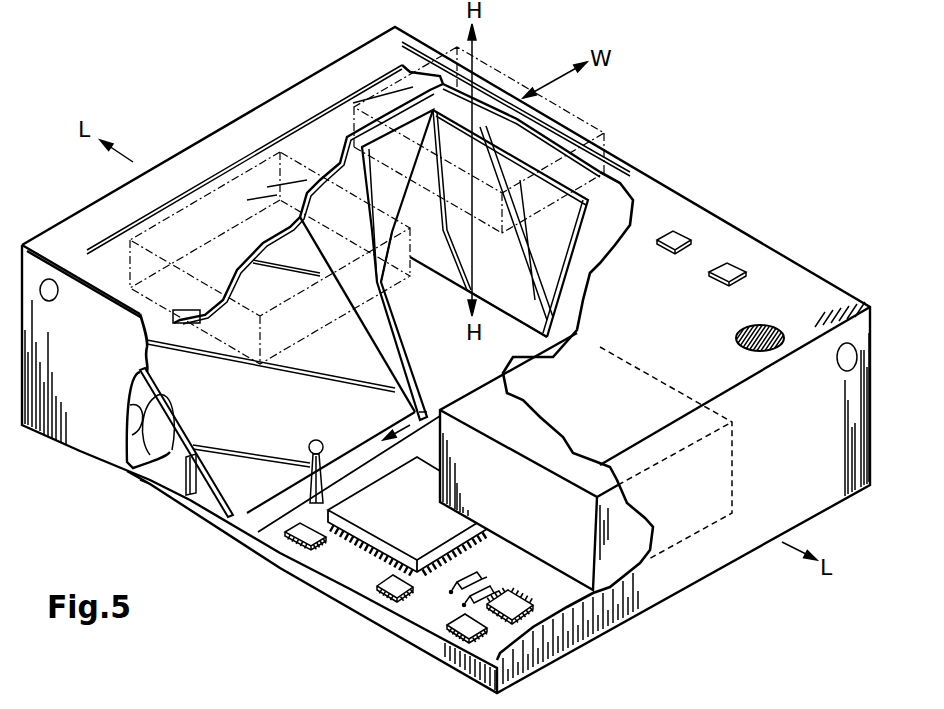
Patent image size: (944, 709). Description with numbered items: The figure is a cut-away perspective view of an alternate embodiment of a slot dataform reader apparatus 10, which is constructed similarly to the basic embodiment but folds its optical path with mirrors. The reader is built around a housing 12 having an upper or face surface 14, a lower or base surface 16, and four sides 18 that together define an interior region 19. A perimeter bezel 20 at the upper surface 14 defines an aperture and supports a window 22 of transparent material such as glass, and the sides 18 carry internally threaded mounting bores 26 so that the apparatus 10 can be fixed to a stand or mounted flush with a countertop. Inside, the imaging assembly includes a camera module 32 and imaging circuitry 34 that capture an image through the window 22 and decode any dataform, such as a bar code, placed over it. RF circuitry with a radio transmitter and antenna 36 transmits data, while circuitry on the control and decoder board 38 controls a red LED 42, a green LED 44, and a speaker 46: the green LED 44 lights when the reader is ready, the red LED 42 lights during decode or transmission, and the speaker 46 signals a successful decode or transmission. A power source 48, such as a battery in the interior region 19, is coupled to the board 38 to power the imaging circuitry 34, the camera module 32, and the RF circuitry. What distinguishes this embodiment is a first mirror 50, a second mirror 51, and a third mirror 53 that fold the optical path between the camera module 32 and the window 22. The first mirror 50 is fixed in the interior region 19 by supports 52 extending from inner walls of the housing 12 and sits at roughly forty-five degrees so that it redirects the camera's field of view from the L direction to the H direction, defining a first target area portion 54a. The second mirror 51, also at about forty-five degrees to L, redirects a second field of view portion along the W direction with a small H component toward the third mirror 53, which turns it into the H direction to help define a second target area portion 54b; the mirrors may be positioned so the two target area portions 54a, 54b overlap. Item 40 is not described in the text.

The slot dataform reader apparatus 10 is at (195, 74).
The housing 12 is at (712, 212).
The upper surface 14 is at (773, 270).
The lower surface 16 is at (242, 528).
The sides 18 is at (107, 410).
The interior region 19 is at (505, 393).
The perimeter bezel 20 is at (343, 94).
The window 22 is at (333, 157).
The mounting bores 26 is at (43, 290).
The camera module 32 is at (580, 555).
The imaging circuitry 34 is at (360, 582).
The antenna 36 is at (282, 545).
The control and decoder board 38 is at (433, 613).
The processor chip 40 is at (397, 512).
The red LED 42 is at (677, 233).
The green LED 44 is at (727, 268).
The speaker 46 is at (765, 328).
The power source 48 is at (135, 472).
The first mirror 50 is at (237, 482).
The second mirror 51 is at (410, 345).
The supports 52 is at (165, 482).
The third mirror 53 is at (530, 315).
The first target area portion 54a is at (225, 202).
The second target area portion 54b is at (578, 127).